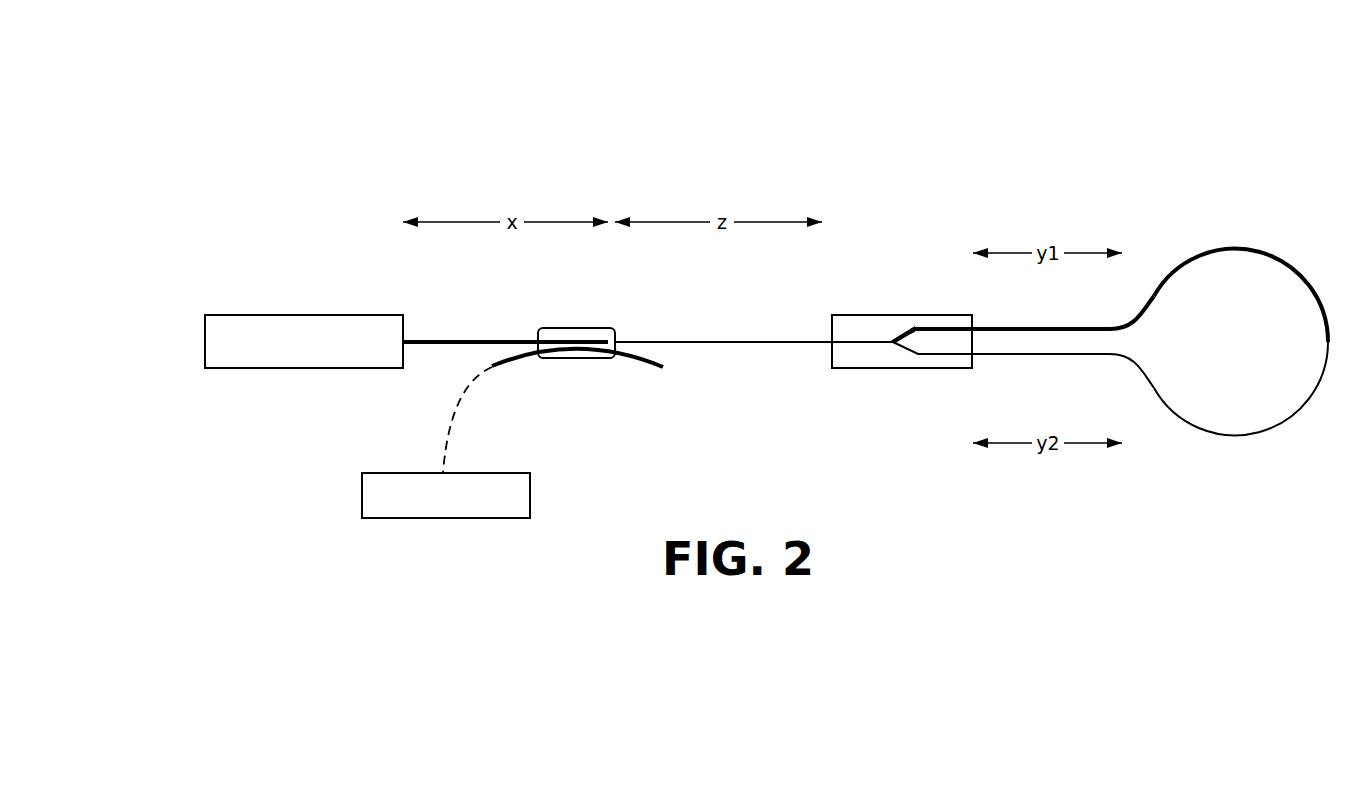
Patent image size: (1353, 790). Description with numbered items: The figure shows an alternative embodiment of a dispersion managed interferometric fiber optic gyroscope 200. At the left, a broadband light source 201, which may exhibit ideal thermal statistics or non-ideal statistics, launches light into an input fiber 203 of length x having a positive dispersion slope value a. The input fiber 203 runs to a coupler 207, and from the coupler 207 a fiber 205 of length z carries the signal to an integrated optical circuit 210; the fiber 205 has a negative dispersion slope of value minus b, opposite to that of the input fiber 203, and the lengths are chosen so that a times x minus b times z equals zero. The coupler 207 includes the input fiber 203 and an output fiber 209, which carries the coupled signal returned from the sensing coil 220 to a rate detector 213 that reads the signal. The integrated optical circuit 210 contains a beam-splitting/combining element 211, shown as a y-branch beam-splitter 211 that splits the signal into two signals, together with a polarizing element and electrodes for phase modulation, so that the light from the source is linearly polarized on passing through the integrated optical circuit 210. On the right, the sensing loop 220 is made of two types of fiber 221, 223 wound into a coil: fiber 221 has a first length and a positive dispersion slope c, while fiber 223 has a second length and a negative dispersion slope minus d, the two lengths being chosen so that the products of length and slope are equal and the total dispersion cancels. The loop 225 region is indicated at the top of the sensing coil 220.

The fiber optic gyroscope 200 is at (246, 126).
The broadband light source 201 is at (281, 315).
The input fiber 203 is at (490, 332).
The fiber 205 is at (763, 332).
The coupler 207 is at (551, 328).
The output fiber 209 is at (530, 368).
The integrated optical circuit 210 is at (902, 324).
The y-branch beam-splitter 211 is at (920, 368).
The rate detector 213 is at (448, 518).
The sensing coil 220 is at (1227, 308).
The fiber 221 is at (1085, 326).
The fiber 223 is at (1085, 356).
The resonator ring fiber coil 225 is at (1222, 240).